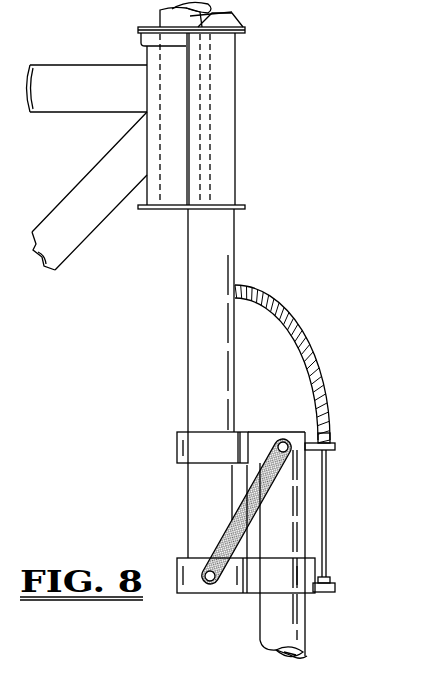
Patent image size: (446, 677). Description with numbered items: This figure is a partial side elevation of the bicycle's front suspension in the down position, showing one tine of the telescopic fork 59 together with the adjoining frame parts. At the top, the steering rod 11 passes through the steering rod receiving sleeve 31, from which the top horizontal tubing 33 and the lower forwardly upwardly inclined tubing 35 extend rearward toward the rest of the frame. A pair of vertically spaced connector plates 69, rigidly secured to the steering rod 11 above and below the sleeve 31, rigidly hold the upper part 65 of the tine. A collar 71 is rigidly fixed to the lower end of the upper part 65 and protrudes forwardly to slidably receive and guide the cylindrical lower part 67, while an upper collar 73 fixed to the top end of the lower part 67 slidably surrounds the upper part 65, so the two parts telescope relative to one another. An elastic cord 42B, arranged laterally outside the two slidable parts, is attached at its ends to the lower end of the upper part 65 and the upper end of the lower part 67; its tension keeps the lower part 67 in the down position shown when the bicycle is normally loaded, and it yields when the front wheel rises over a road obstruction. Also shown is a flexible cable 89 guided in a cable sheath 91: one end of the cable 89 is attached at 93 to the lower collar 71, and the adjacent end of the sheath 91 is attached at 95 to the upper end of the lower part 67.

The steering rod 11 is at (237, 9).
The steering rod receiving sleeve 31 is at (154, 192).
The top horizontal tubing 33 is at (87, 88).
The lower forwardly upwardly inclined tubing 35 is at (95, 226).
The elastic cord 42B is at (256, 479).
The telescopic fork 59 is at (158, 379).
The upper part 65 is at (219, 253).
The lower part 67 is at (288, 531).
The connector plates 69 is at (242, 28).
The collar 71 is at (281, 586).
The upper collar 73 is at (180, 461).
The flexible cable 89 is at (326, 537).
The cable sheath 91 is at (291, 319).
The cable attachment point 93 is at (335, 586).
The cable sheath attachment point 95 is at (337, 448).